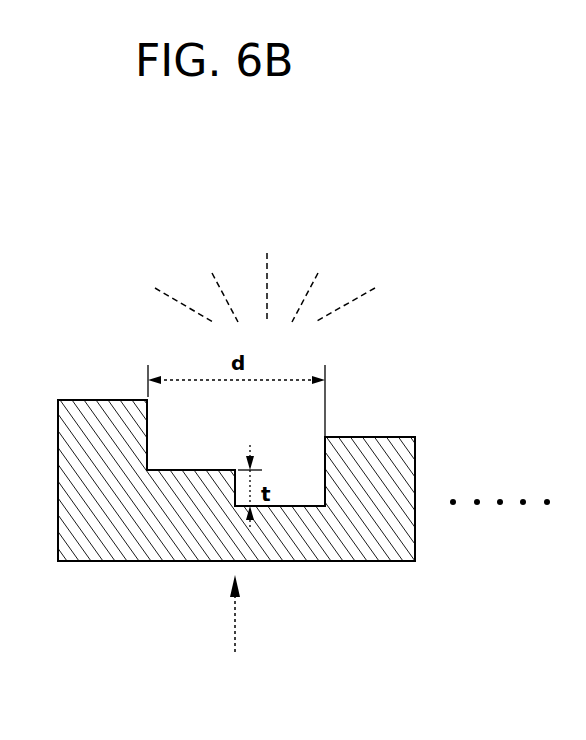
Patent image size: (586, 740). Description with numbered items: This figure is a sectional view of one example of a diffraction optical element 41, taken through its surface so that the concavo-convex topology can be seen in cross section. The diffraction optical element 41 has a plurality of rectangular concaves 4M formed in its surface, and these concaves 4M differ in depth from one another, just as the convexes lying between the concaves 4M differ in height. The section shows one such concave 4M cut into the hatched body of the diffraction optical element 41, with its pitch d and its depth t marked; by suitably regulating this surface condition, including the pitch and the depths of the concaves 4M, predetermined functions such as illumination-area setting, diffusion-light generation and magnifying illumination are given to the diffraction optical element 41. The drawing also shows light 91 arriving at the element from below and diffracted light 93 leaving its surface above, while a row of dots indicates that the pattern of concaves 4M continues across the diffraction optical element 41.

The diffraction optical element 41 is at (412, 538).
The concaves 4M is at (297, 503).
The reflected light 93 is at (338, 311).
The incident light 91 is at (232, 625).